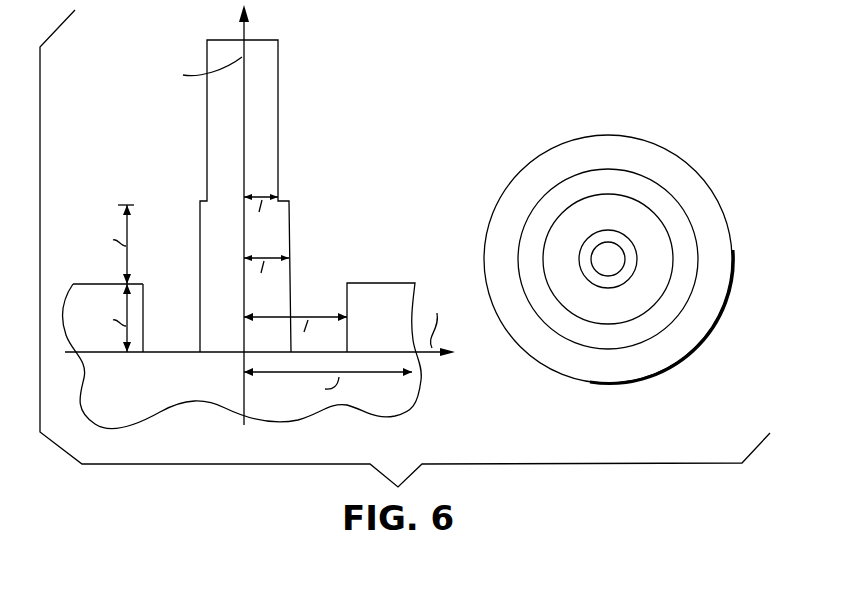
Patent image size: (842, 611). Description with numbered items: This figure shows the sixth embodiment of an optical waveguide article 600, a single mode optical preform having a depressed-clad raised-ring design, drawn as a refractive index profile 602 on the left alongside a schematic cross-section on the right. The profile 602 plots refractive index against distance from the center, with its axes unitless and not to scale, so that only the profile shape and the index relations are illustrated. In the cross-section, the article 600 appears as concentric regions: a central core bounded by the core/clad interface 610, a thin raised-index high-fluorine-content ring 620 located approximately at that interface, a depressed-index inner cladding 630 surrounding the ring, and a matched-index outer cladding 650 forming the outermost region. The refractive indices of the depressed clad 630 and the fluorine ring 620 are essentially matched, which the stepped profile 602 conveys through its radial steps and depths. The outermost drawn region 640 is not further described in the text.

The optical waveguide article 600 is at (605, 289).
The refractive index profile 602 is at (323, 176).
The core/clad interface 610 is at (607, 272).
The high-fluorine-content ring 620 is at (615, 283).
The depressed-index inner cladding 630 is at (630, 305).
The outer ring 640 is at (703, 318).
The matched-index outer cladding 650 is at (662, 318).